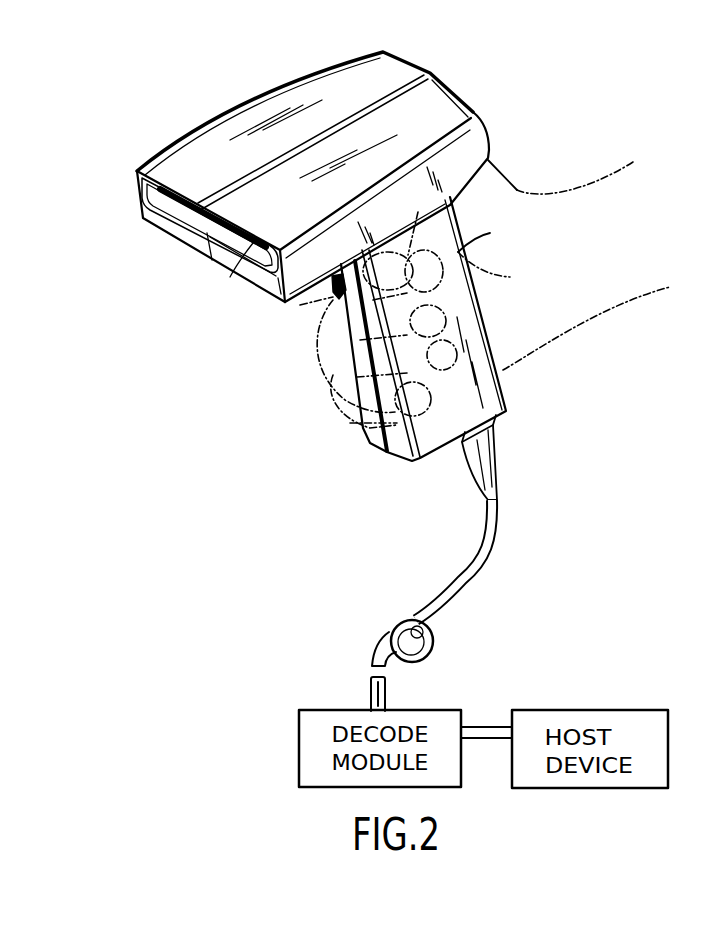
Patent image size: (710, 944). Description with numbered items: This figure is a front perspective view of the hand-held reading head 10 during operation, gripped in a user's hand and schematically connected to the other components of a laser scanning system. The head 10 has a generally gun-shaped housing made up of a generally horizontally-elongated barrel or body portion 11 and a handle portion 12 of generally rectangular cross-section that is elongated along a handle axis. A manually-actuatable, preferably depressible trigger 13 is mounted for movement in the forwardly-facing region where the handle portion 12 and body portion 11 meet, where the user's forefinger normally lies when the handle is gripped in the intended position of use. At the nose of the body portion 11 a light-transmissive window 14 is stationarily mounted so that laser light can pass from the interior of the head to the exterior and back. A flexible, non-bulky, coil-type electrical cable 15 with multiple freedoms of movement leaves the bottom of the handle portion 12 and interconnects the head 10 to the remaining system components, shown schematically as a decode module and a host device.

The hand-held reading head 10 is at (352, 273).
The body portion 11 is at (487, 138).
The handle portion 12 is at (380, 450).
The trigger 13 is at (315, 305).
The window 14 is at (230, 277).
The coil-type electrical cable 15 is at (498, 460).